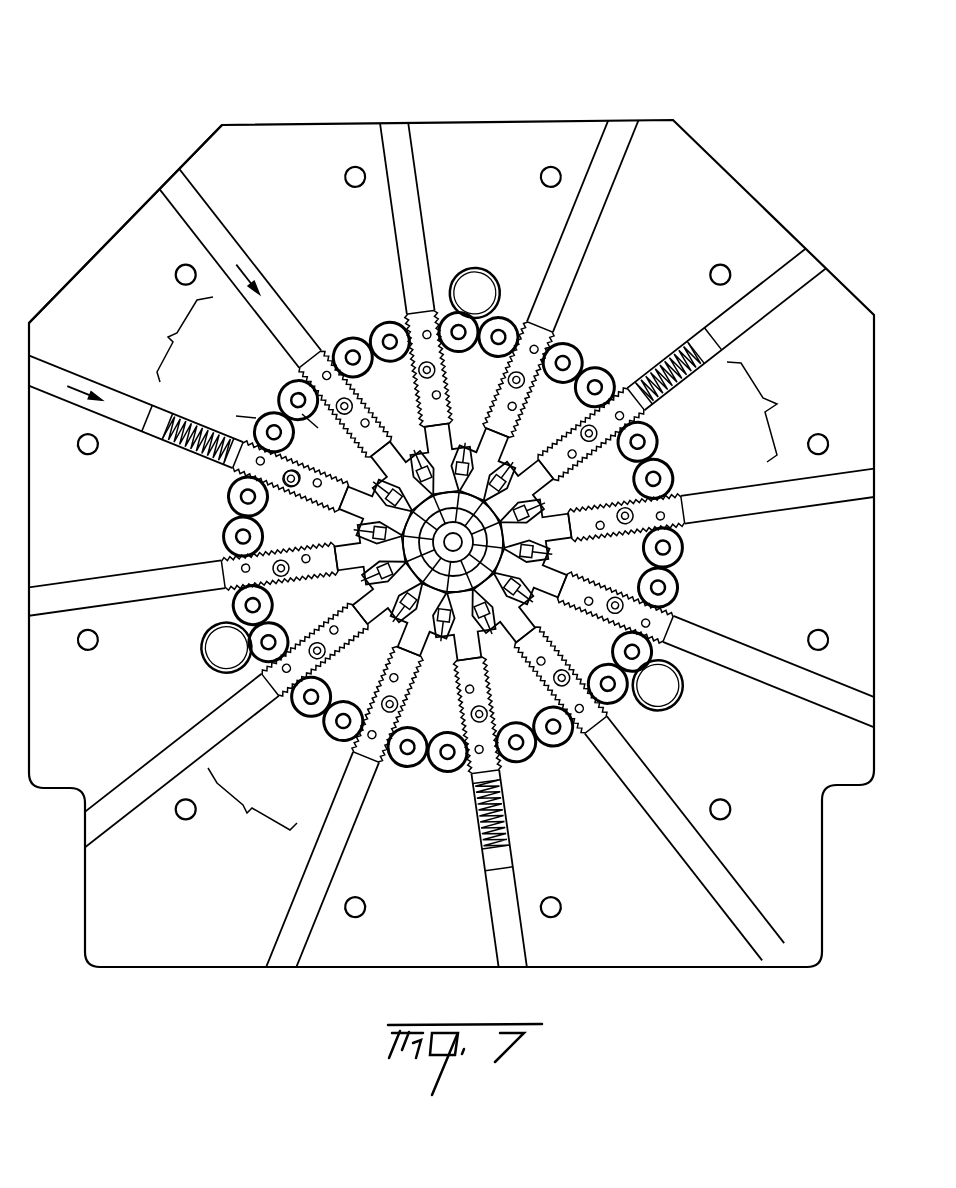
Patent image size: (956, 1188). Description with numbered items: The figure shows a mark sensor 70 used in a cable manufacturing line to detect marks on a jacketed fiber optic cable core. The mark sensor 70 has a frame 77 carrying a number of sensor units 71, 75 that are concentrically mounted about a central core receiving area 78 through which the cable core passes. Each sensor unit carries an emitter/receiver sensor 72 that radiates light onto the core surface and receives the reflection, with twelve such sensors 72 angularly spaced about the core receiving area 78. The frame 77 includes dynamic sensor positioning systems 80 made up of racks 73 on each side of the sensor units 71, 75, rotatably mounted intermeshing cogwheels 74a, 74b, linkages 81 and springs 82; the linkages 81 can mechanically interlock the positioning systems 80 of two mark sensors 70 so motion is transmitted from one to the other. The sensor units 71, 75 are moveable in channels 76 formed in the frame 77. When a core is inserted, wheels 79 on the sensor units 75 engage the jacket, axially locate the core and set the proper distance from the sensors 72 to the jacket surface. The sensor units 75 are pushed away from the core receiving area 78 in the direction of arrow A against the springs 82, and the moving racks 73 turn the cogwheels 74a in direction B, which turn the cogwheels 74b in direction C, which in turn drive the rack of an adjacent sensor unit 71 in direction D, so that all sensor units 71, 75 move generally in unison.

The mark sensor 70 is at (283, 98).
The sensor unit 71 is at (298, 340).
The emitter/receiver sensor 72 is at (388, 497).
The rack 73 is at (298, 476).
The cogwheel 74a is at (258, 422).
The cogwheel 74b is at (298, 394).
The sensor unit 75 is at (610, 374).
The channel 76 is at (170, 180).
The frame 77 is at (132, 237).
The core receiving area 78 is at (470, 546).
The wheel 79 is at (448, 602).
The dynamic sensor positioning system 80 is at (475, 570).
The linkage 81 is at (471, 264).
The spring 82 is at (656, 374).